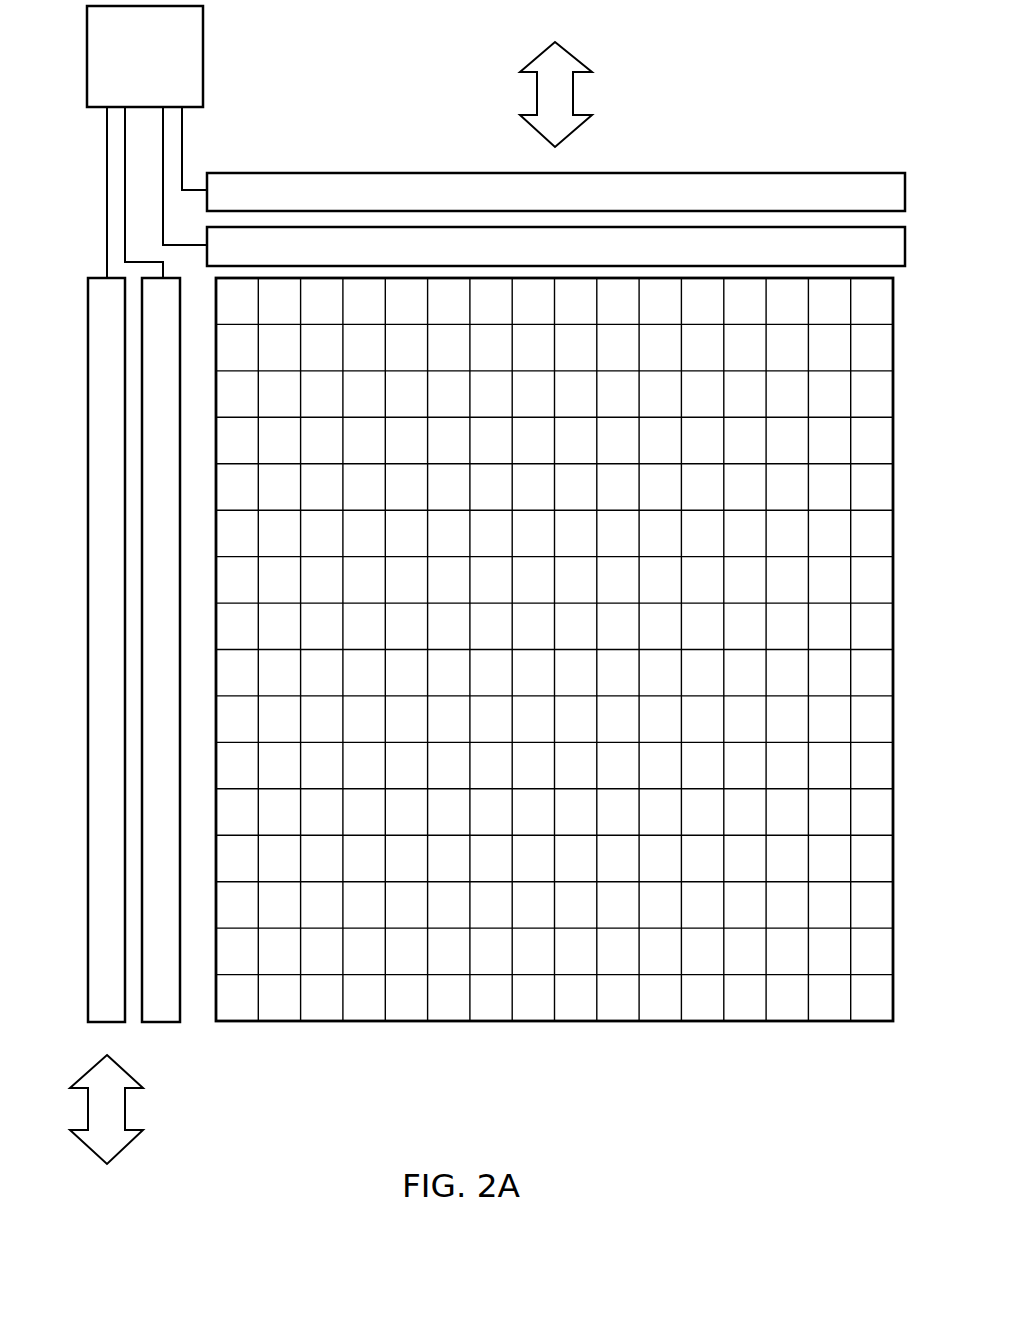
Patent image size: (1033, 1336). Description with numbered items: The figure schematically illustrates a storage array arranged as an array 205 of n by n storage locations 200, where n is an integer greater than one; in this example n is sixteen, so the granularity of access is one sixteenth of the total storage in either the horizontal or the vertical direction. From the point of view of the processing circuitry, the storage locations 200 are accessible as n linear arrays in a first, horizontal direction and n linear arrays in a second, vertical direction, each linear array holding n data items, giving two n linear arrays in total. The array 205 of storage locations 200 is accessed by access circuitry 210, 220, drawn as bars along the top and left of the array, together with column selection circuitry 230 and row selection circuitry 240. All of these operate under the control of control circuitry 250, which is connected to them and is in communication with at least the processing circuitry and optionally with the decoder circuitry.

The storage location 200 is at (745, 1003).
The array 205 is at (358, 1042).
The access circuitry 210 is at (398, 192).
The access circuitry 220 is at (102, 587).
The column selection circuitry 230 is at (717, 247).
The row selection circuitry 240 is at (155, 837).
The control circuitry 250 is at (203, 55).